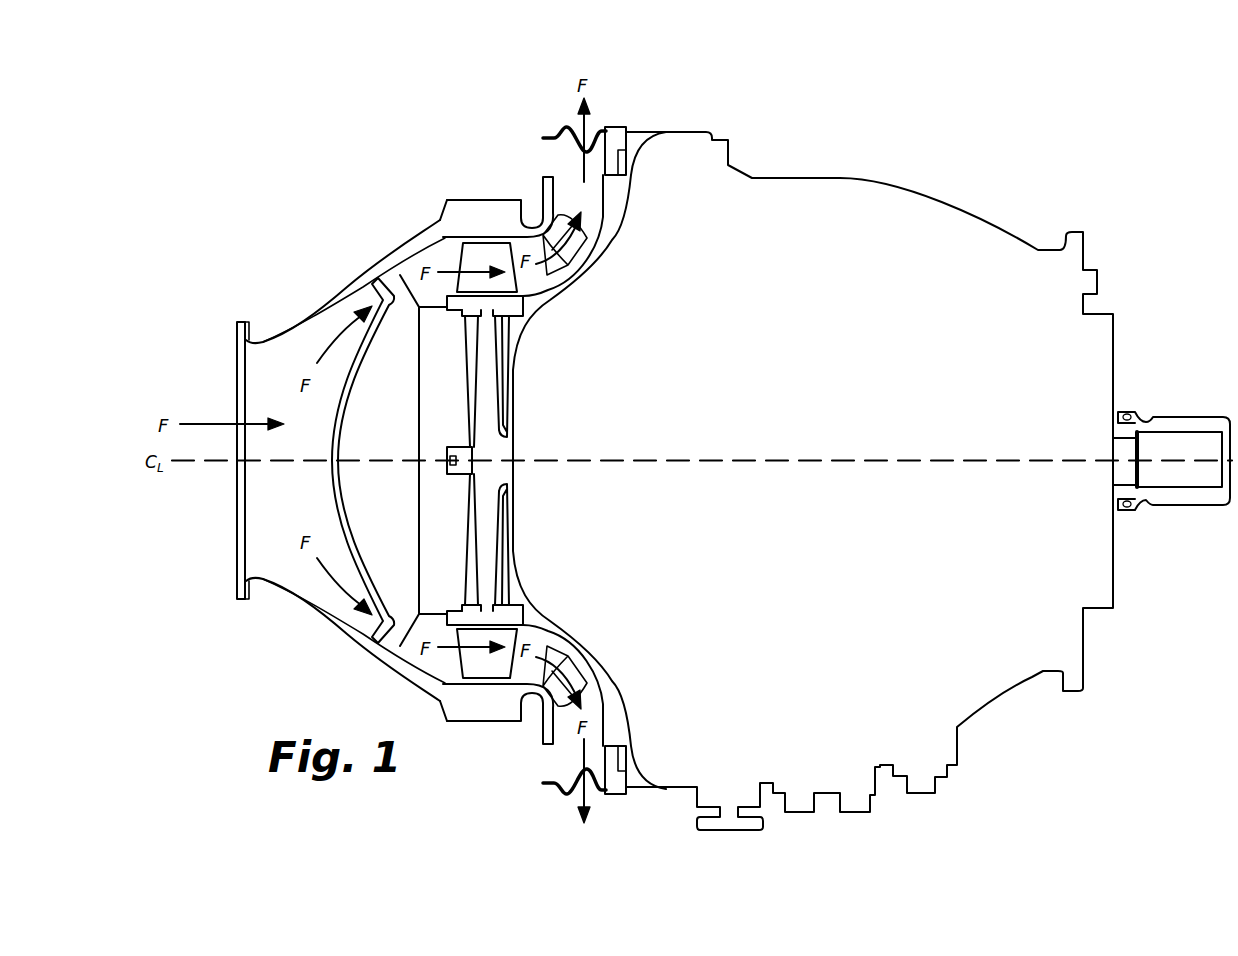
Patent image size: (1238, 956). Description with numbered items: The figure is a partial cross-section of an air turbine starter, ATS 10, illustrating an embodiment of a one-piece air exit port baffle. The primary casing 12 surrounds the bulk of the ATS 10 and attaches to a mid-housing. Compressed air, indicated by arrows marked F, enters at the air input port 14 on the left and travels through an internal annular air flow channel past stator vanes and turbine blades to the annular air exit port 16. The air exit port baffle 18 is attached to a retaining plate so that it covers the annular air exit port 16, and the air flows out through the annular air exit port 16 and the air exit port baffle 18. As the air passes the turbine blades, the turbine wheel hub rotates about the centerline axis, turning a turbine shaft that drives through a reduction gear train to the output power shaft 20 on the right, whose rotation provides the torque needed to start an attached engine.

The ATS 10 is at (1086, 120).
The primary casing 12 is at (970, 213).
The air input port 14 is at (237, 384).
The annular air exit port 16 is at (567, 180).
The air exit port baffle 18 is at (605, 127).
The output power shaft 20 is at (1200, 415).